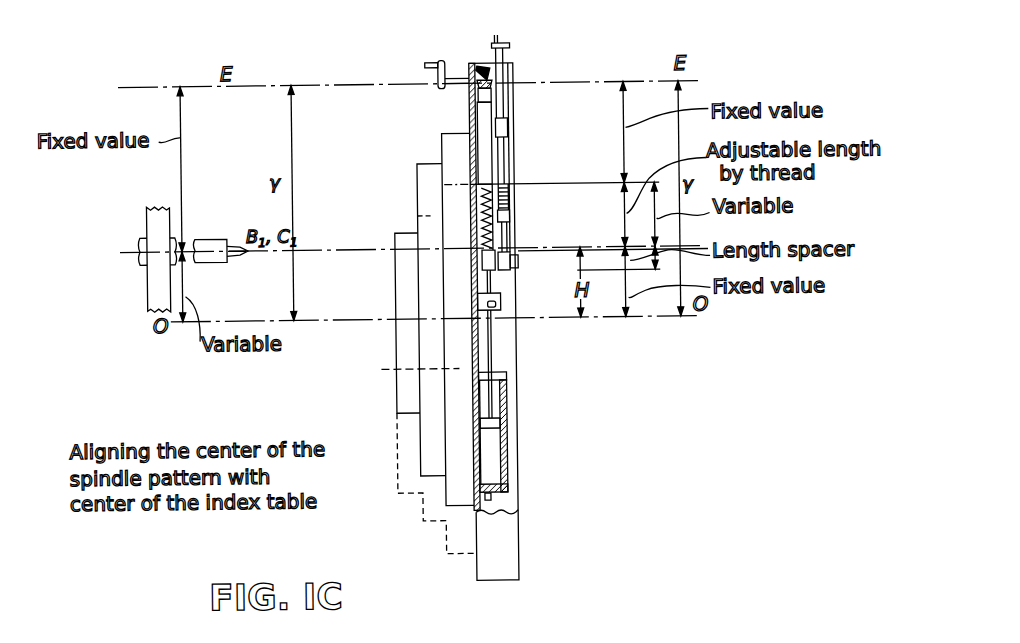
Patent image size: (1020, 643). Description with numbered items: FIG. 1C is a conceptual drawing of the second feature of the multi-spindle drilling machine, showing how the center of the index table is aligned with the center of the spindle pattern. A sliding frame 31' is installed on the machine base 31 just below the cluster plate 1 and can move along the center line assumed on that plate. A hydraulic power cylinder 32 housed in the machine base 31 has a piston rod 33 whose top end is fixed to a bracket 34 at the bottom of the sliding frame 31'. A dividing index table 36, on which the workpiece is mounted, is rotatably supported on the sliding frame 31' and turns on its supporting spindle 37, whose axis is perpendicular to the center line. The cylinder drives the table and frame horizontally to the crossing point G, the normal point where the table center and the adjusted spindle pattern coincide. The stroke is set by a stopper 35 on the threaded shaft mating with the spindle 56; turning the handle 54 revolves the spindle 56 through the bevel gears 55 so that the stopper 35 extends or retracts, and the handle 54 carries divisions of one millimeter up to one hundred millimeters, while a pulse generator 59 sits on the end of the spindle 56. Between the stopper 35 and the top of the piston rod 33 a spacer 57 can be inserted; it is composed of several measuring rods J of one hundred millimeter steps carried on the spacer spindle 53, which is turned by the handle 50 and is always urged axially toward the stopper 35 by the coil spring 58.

The cluster plate 1 is at (162, 229).
The machine base 31 is at (516, 321).
The sliding frame 31' is at (454, 300).
The hydraulic power cylinder 32 is at (504, 455).
The piston rod 33 is at (490, 332).
The bracket 34 is at (495, 297).
The stopper 35 is at (511, 185).
The dividing index table 36 is at (417, 221).
The supporting spindle 37 is at (382, 318).
The handle 50 is at (498, 34).
The spacer spindle 53 is at (490, 160).
The handle 54 is at (441, 60).
The bevel gears 55 is at (487, 64).
The spindle 56 is at (488, 94).
The spacer 57 is at (519, 265).
The coil spring 58 is at (511, 207).
The pulse generator 59 is at (503, 145).
The crossing point (normal point) G is at (491, 248).
The measuring rod J is at (487, 265).